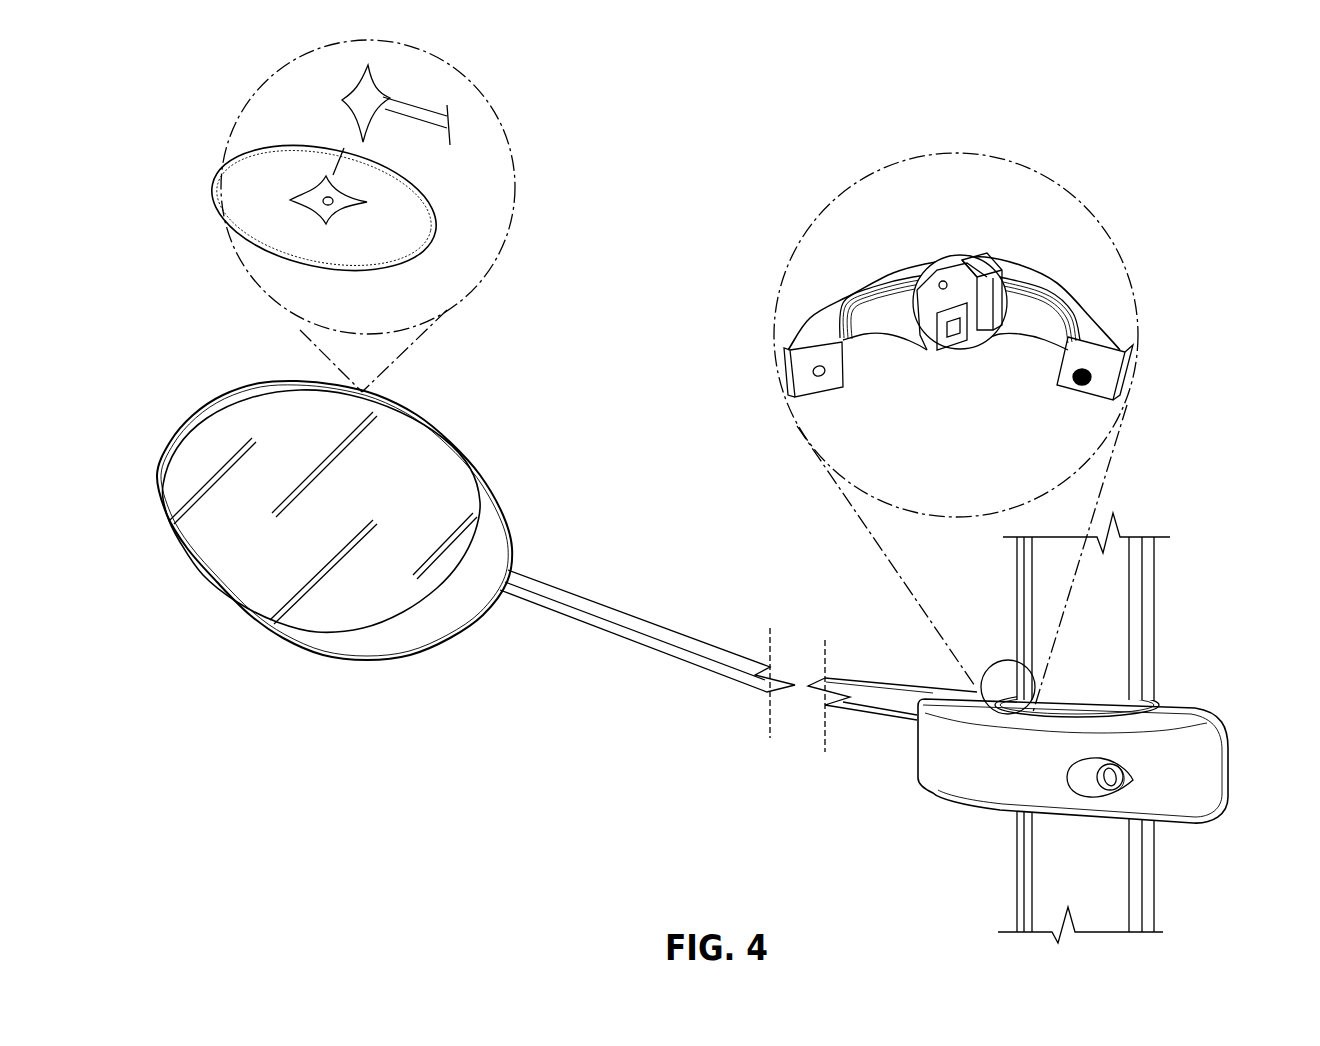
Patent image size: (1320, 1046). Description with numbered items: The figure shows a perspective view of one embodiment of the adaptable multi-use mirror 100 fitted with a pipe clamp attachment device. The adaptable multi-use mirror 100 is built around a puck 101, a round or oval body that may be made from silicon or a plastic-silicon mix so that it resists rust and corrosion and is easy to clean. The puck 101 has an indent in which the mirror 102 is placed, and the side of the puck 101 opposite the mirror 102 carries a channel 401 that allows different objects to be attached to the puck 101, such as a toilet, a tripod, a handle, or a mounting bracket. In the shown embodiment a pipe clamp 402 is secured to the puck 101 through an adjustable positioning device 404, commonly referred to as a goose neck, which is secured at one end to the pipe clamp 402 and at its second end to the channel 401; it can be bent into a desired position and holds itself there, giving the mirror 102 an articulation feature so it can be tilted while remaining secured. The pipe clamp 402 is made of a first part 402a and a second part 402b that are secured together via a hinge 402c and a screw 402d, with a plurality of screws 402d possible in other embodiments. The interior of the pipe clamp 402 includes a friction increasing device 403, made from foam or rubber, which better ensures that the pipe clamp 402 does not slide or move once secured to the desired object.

The adaptable multi-use mirror 100 is at (334, 552).
The puck 101 is at (251, 625).
The mirror 102 is at (338, 524).
The channel 401 is at (345, 213).
The pipe clamp 402 is at (1100, 758).
The first part 402a is at (1027, 266).
The second part 402b is at (905, 275).
The hinge 402c is at (952, 258).
The screw 402d is at (1131, 785).
The friction increasing device 403 is at (958, 302).
The adjustable positioning device 404 is at (636, 617).